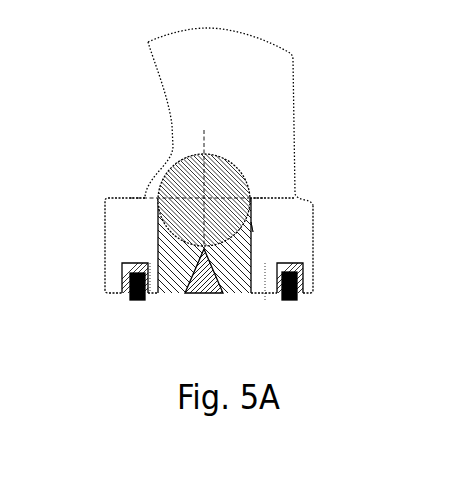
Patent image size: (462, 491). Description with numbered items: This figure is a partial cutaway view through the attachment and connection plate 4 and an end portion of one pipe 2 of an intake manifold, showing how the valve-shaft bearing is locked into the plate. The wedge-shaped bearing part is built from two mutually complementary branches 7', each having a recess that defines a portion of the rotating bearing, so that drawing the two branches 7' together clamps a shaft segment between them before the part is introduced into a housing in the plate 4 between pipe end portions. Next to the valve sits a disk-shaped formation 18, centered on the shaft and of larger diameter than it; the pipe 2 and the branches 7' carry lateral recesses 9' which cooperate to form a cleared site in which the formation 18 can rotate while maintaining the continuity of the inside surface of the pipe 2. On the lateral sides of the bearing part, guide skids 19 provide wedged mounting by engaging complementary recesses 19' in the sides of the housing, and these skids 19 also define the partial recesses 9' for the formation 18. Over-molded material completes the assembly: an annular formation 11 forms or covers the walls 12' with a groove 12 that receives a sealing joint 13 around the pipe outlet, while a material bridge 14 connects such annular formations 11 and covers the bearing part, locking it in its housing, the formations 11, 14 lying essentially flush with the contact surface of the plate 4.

The pipe 2 is at (277, 113).
The attachment and connection plate 4 is at (303, 223).
The branch 7' is at (199, 248).
The lateral recess 9' is at (249, 124).
The annular formation 11 is at (454, 276).
The groove 12 is at (315, 301).
The wall 12' is at (98, 274).
The sealing joint 13 is at (136, 301).
The material bridge 14 is at (202, 273).
The disk-shaped formation 18 is at (228, 183).
The guide skid 19 is at (344, 179).
The recess 19' is at (314, 191).